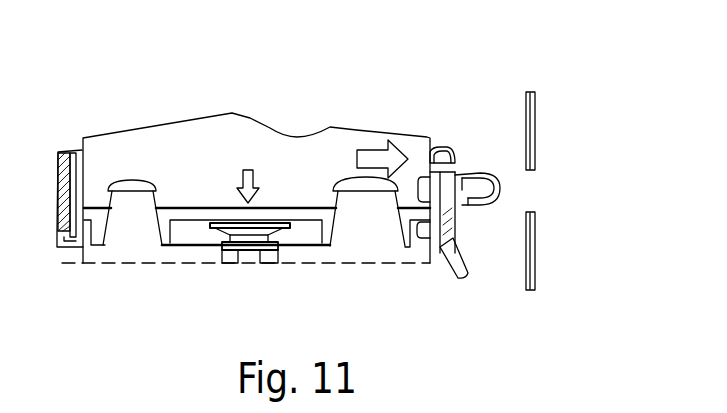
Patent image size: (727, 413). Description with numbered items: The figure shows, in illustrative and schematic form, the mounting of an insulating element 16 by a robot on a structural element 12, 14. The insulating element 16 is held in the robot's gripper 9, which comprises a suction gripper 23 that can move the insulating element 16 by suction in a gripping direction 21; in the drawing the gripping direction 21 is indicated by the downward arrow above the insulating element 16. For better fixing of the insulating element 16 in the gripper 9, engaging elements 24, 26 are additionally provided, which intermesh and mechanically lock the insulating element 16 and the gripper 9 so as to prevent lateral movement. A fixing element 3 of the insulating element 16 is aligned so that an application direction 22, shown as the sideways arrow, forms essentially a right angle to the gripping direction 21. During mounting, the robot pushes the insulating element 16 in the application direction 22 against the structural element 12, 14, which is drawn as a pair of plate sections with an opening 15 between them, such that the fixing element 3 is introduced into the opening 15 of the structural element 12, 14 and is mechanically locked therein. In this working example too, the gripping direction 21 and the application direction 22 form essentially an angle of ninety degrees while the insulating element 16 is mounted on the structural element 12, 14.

The fixing element 3 is at (487, 173).
The gripper 9 is at (290, 285).
The structural element 12 is at (588, 131).
The structural element 14 is at (532, 123).
The opening 15 is at (530, 195).
The insulating element 16 is at (160, 109).
The gripping direction 21 is at (246, 170).
The application direction 22 is at (377, 160).
The suction gripper 23 is at (245, 232).
The engaging element 24 is at (127, 227).
The engaging element 26 is at (133, 179).